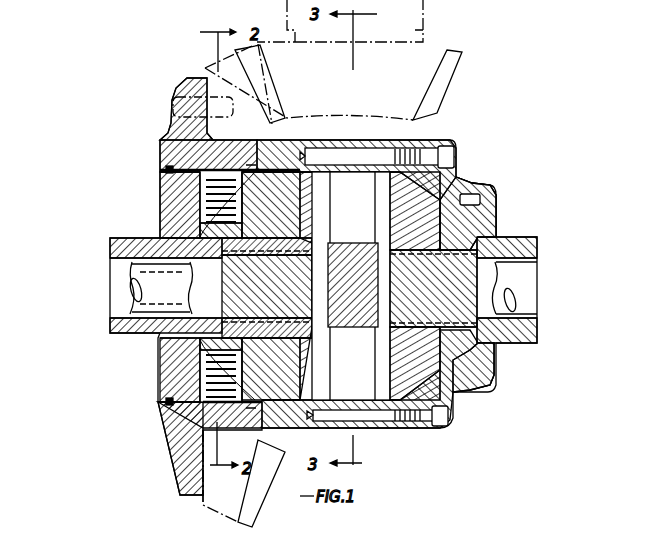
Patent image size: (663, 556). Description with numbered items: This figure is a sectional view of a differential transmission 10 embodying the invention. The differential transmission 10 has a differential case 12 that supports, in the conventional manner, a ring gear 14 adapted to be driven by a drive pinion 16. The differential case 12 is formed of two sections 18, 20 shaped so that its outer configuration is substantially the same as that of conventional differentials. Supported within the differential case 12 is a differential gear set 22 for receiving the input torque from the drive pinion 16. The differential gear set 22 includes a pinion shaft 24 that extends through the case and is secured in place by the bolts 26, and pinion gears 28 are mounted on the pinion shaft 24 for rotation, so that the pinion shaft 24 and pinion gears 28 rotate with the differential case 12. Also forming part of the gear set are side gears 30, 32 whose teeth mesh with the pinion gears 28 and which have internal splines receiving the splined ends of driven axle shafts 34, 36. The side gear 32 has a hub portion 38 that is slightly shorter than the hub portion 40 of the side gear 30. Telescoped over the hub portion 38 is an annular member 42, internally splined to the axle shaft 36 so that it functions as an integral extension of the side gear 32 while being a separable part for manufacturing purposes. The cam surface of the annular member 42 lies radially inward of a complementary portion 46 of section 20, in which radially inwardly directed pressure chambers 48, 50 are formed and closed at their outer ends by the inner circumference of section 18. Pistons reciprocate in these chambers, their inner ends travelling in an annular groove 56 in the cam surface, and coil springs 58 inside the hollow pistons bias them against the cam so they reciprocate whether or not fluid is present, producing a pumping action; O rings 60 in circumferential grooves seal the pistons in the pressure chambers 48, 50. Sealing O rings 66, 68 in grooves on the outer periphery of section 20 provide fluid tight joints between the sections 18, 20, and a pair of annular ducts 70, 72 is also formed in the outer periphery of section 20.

The differential transmission 10 is at (470, 128).
The differential case 12 is at (458, 178).
The ring gear 14 is at (205, 68).
The drive pinion 16 is at (456, 75).
The casing section 18 is at (163, 142).
The casing section 20 is at (160, 170).
The differential gear set 22 is at (450, 221).
The pinion shaft 24 is at (352, 214).
The bolts 26 is at (455, 158).
The pinion gears 28 is at (305, 160).
The side gear 30 is at (493, 357).
The side gear 32 is at (294, 354).
The driven axle shaft 34 is at (503, 285).
The driven axle shaft 36 is at (143, 287).
The hub portion 38 is at (197, 350).
The hub portion 40 is at (497, 343).
The annular member 42 is at (260, 331).
The complementary portion 46 is at (197, 237).
The pressure chamber 48 is at (238, 170).
The pressure chamber 50 is at (202, 402).
The annular groove 56 is at (267, 286).
The coil springs 58 is at (218, 170).
The O rings 60 is at (200, 205).
The O ring 66 is at (170, 170).
The O ring 68 is at (263, 170).
The annular duct 70 is at (145, 440).
The annular duct 72 is at (253, 412).